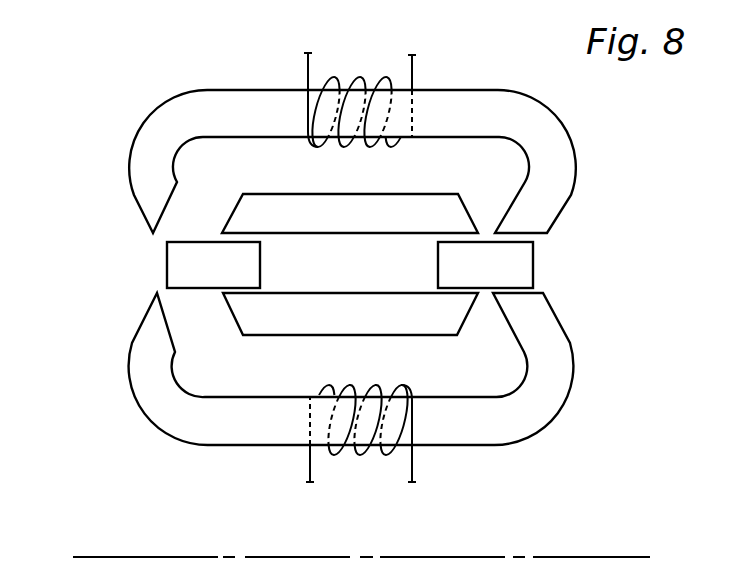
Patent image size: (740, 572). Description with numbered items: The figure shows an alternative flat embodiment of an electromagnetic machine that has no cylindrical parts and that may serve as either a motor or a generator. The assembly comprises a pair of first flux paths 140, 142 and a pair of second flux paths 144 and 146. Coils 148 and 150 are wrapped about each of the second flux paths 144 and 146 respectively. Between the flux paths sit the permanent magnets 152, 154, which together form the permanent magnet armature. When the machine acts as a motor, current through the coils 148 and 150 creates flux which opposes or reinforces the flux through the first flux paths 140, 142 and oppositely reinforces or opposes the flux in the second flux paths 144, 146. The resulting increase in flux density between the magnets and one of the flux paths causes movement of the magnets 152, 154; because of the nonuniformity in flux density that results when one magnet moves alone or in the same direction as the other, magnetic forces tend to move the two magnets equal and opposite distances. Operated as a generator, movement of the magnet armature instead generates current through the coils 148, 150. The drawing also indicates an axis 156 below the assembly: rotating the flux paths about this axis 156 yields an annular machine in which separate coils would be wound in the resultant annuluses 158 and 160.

The first flux path 140 is at (425, 195).
The first flux path 142 is at (400, 336).
The second flux path 144 is at (573, 187).
The second flux path 146 is at (573, 352).
The coil 148 is at (412, 72).
The coil 150 is at (410, 462).
The magnet 152 is at (167, 265).
The magnet 154 is at (533, 265).
The axis 156 is at (552, 557).
The annulus 158 is at (498, 167).
The annulus 160 is at (495, 352).